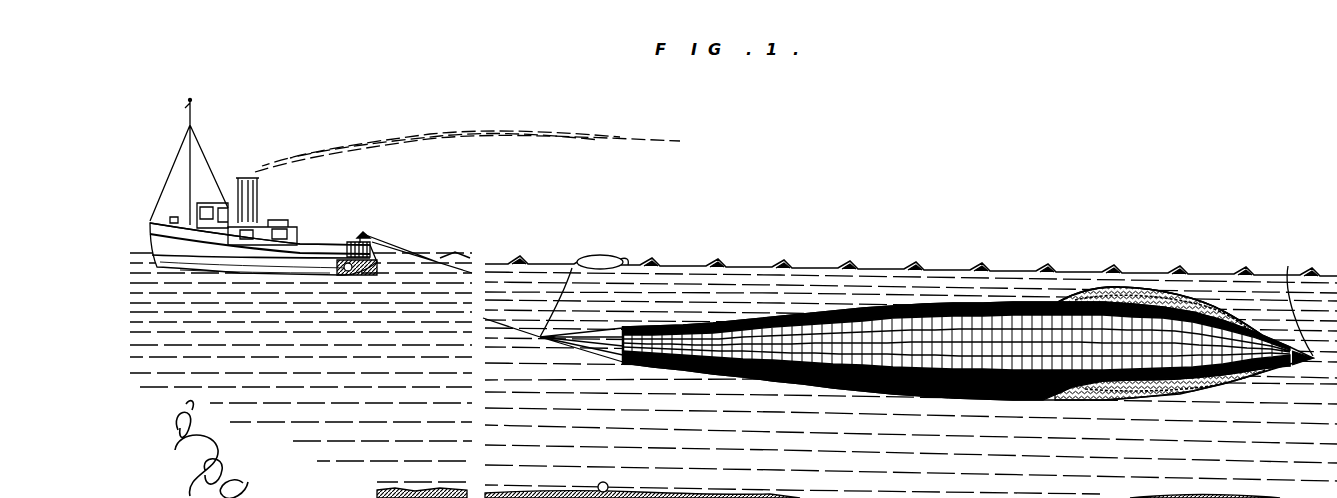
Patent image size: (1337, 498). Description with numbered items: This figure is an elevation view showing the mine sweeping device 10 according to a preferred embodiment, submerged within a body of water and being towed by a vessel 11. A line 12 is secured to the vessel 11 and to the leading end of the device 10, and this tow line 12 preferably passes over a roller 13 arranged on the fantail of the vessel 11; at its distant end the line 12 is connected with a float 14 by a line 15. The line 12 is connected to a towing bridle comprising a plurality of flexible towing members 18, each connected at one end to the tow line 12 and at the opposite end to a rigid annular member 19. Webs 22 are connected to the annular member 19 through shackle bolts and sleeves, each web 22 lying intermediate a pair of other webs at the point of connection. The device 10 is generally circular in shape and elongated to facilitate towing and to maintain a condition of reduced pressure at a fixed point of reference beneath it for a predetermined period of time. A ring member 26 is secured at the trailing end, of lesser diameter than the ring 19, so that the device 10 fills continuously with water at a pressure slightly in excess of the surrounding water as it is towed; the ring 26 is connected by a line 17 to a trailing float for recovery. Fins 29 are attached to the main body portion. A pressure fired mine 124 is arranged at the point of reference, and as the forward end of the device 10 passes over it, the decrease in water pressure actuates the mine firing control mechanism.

The device 10 is at (838, 385).
The vessel 11 is at (283, 243).
The line 12 is at (403, 247).
The roller 13 is at (363, 231).
The float 14 is at (592, 256).
The line 15 is at (566, 290).
The line 17 is at (1297, 302).
The flexible towing members 18 is at (586, 346).
The rigid annular member 19 is at (622, 354).
The webs 22 is at (984, 400).
The ring member 26 is at (1308, 364).
The fins 29 is at (1137, 297).
The pressure fired mine 124 is at (608, 484).